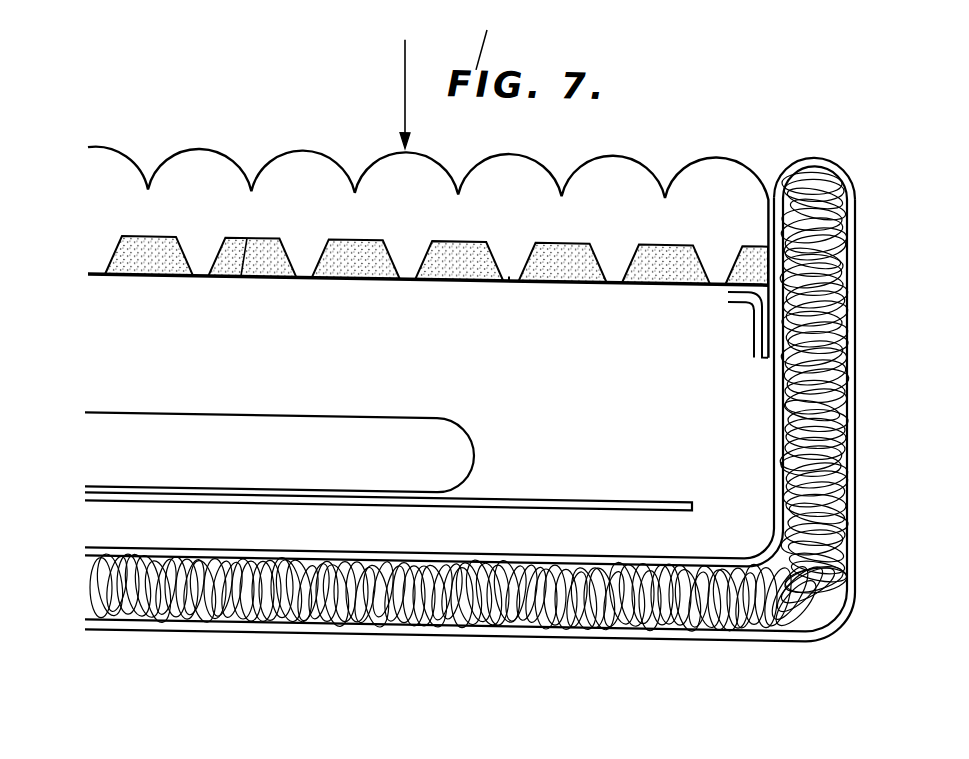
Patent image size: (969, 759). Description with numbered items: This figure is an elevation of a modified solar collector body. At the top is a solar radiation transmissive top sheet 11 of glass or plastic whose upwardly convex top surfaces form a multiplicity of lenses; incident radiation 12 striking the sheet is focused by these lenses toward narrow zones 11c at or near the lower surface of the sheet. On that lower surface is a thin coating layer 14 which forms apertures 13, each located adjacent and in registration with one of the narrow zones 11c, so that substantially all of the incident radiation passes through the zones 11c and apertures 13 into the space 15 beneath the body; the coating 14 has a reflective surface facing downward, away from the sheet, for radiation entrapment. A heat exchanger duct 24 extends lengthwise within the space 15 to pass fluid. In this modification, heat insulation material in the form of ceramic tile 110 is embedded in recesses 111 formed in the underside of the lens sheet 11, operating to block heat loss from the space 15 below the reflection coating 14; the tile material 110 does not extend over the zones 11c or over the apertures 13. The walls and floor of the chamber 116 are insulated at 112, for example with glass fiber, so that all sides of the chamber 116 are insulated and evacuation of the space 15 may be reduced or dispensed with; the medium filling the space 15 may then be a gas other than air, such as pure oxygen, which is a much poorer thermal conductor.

The top sheet 11 is at (644, 151).
The narrow zones 11c is at (509, 268).
The incident radiation 12 is at (404, 84).
The aperture 13 is at (612, 276).
The coating layer 14 is at (455, 274).
The space 15 is at (378, 381).
The heat exchanger duct 24 is at (460, 442).
The ceramic tile 110 is at (332, 232).
The recesses 111 is at (241, 280).
The insulation 112 is at (431, 586).
The chamber 116 is at (645, 636).